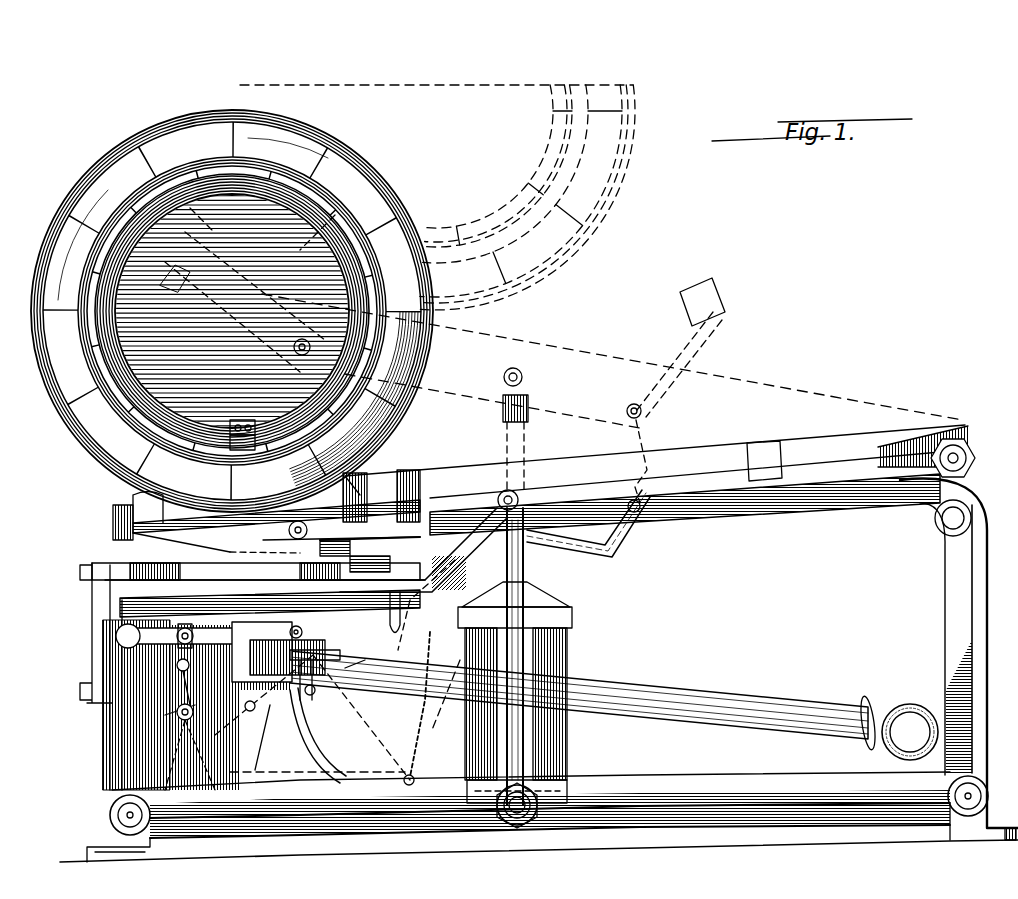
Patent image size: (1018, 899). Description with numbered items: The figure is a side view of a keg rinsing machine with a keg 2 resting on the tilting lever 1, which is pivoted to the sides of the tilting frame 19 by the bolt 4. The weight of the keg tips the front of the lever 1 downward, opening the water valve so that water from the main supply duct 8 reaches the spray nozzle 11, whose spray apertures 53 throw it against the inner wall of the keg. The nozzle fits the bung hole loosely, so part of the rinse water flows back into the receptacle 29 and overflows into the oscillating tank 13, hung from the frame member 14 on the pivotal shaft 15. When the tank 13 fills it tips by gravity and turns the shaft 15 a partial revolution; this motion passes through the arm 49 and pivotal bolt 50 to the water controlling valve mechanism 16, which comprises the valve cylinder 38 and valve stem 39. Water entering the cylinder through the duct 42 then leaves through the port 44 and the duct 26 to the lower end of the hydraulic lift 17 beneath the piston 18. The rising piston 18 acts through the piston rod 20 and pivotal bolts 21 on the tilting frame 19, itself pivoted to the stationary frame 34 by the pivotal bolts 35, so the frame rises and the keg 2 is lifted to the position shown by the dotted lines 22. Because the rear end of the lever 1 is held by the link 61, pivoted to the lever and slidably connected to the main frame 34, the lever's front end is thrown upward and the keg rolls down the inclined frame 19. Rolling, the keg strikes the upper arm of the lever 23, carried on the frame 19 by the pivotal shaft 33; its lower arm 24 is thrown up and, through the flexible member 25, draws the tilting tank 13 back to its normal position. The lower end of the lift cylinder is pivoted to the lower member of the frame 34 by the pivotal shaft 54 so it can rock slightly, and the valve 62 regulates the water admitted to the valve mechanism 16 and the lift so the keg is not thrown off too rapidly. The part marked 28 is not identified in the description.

The tilting lever 1 is at (140, 546).
The keg 2 is at (72, 424).
The bolt 4 is at (293, 347).
The main supply duct 8 is at (650, 697).
The spray nozzle 11 is at (260, 416).
The oscillating tank 13 is at (335, 670).
The frame member 14 is at (210, 775).
The pivotal shaft 15 is at (172, 718).
The water controlling valve mechanism 16 is at (270, 737).
The hydraulic lift 17 is at (570, 738).
The piston 18 is at (445, 701).
The tilting frame 19 is at (790, 386).
The piston rod 20 is at (530, 443).
The pivotal bolts 21 is at (524, 374).
The dotted lines 22 is at (636, 165).
The lever 23 is at (728, 320).
The lower arm 24 is at (578, 560).
The flexible member 25 is at (438, 658).
The duct 26 is at (300, 738).
The pawl 28 is at (322, 692).
The receptacle 29 is at (239, 554).
The pivotal shaft 33 is at (645, 411).
The stationary frame 34 is at (948, 556).
The pivotal bolts 35 is at (966, 472).
The valve cylinder 38 is at (357, 652).
The valve stem 39 is at (250, 712).
The duct 42 is at (252, 663).
The port 44 is at (306, 645).
The arm 49 is at (190, 747).
The pivotal bolt 50 is at (170, 682).
The spray apertures 53 is at (239, 409).
The pivotal shaft 54 is at (562, 788).
The link 61 is at (378, 470).
The valve 62 is at (160, 645).